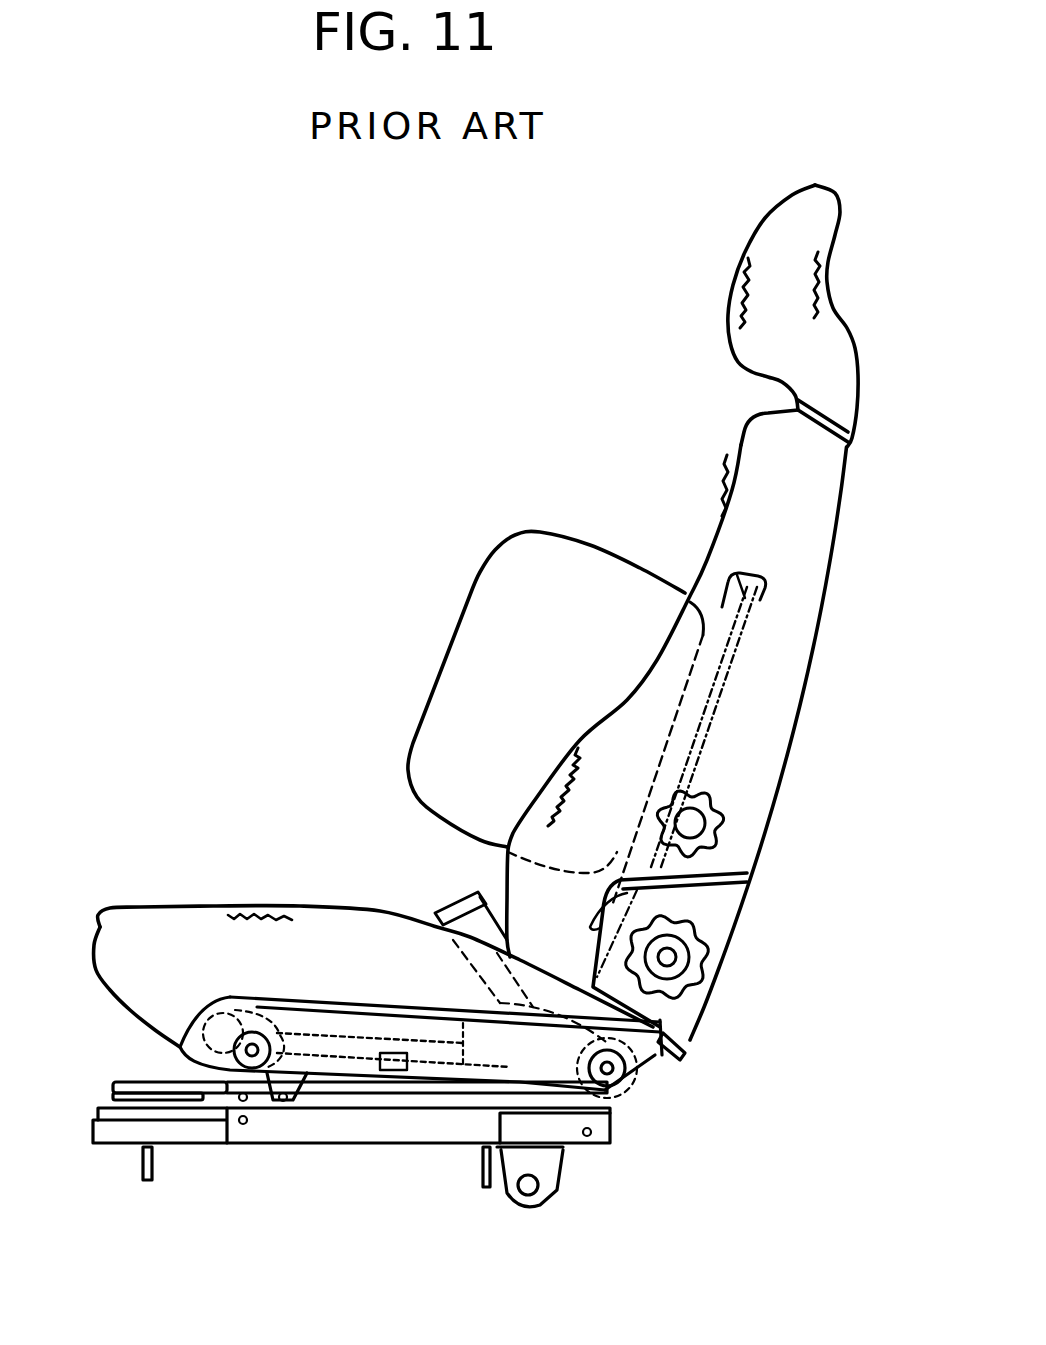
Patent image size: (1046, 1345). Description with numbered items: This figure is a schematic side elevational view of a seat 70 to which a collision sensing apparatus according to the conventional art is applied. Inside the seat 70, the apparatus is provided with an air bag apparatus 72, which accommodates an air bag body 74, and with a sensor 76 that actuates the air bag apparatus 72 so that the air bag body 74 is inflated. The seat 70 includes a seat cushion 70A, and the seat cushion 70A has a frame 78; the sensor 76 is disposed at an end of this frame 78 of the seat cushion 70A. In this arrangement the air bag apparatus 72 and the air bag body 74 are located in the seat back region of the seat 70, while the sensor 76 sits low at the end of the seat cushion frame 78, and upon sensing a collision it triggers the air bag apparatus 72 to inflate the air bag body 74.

The seat 70 is at (827, 587).
The seat cushion 70A is at (237, 907).
The air bag apparatus 72 is at (717, 692).
The air bag body 74 is at (457, 633).
The sensor 76 is at (245, 1008).
The frame 78 is at (180, 1047).